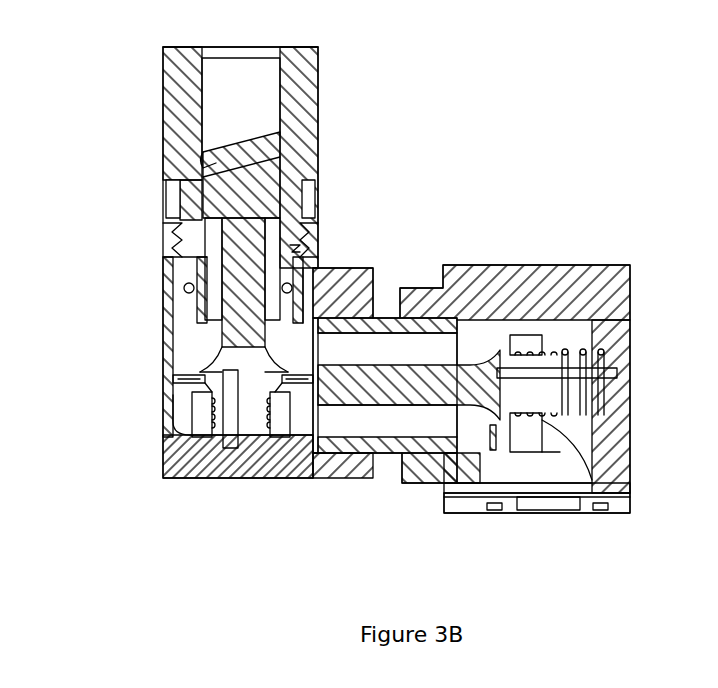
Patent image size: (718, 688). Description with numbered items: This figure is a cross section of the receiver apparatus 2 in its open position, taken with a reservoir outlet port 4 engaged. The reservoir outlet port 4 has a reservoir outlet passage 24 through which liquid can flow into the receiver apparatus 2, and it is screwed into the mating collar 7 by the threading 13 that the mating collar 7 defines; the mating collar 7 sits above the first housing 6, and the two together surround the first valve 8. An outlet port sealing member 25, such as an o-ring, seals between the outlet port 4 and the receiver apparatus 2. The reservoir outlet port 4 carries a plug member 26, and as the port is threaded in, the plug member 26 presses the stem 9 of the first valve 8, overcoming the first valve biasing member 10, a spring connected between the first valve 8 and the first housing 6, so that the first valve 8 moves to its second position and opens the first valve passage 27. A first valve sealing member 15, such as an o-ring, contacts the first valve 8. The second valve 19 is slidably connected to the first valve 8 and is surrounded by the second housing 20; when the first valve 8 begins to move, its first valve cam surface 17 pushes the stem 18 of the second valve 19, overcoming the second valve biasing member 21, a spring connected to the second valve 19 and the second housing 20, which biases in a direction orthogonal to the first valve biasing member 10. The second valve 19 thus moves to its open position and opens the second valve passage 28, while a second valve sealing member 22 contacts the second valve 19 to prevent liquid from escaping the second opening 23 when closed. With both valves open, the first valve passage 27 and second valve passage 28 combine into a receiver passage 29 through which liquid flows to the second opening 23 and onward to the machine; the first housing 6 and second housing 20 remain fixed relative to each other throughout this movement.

The receiver apparatus 2 is at (146, 454).
The reservoir outlet port 4 is at (170, 112).
The first housing 6 is at (177, 478).
The mating collar 7 is at (167, 238).
The first valve 8 is at (166, 297).
The stem 9 is at (236, 255).
The first valve biasing member 10 is at (207, 418).
The threading 13 is at (296, 250).
The first valve sealing member 15 is at (178, 383).
The first valve cam surface 17 is at (303, 450).
The stem 18 is at (355, 432).
The second valve 19 is at (443, 360).
The second housing 20 is at (627, 457).
The second valve biasing member 21 is at (577, 403).
The second valve sealing member 22 is at (633, 502).
The second opening 23 is at (563, 513).
The reservoir outlet passage 24 is at (248, 88).
The outlet port sealing member 25 is at (164, 256).
The plug member 26 is at (196, 181).
The first valve passage 27 is at (322, 298).
The second valve passage 28 is at (487, 445).
The receiver passage 29 is at (348, 455).